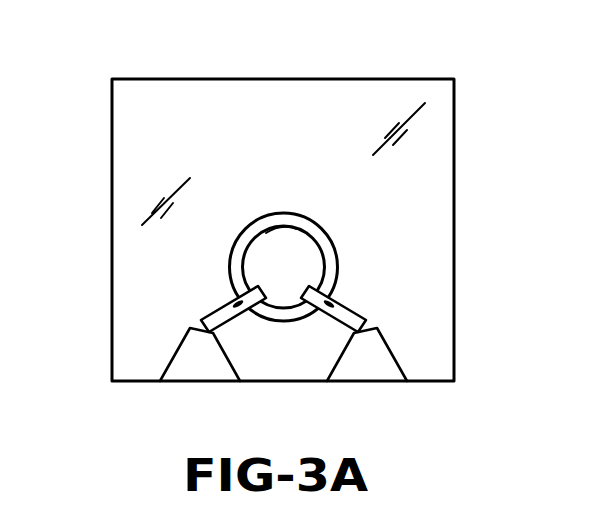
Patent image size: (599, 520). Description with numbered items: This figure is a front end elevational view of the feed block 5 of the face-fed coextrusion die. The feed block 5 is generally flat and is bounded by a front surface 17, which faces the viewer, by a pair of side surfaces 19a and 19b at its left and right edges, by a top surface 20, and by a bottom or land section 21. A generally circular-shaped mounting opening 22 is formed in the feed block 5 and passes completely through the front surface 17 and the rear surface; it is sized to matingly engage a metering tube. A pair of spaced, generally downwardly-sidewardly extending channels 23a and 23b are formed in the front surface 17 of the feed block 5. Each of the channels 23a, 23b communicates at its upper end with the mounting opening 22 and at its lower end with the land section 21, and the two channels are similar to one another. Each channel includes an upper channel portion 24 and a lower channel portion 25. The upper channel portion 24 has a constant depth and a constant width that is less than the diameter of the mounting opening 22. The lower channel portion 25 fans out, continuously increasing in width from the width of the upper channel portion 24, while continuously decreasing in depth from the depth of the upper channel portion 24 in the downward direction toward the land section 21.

The feed block 5 is at (246, 62).
The front surface 17 is at (440, 128).
The side surface 19a is at (112, 180).
The side surface 19b is at (455, 180).
The top surface 20 is at (372, 79).
The land section 21 is at (294, 372).
The mounting opening 22 is at (300, 226).
The channel 23a is at (213, 313).
The channel 23b is at (354, 313).
The upper channel portion 24 is at (225, 300).
The lower channel portion 25 is at (172, 355).